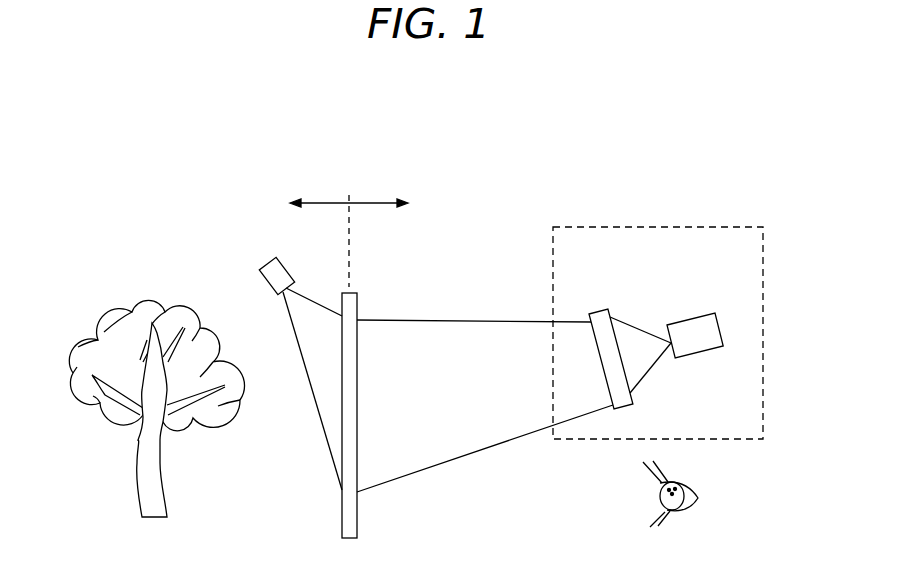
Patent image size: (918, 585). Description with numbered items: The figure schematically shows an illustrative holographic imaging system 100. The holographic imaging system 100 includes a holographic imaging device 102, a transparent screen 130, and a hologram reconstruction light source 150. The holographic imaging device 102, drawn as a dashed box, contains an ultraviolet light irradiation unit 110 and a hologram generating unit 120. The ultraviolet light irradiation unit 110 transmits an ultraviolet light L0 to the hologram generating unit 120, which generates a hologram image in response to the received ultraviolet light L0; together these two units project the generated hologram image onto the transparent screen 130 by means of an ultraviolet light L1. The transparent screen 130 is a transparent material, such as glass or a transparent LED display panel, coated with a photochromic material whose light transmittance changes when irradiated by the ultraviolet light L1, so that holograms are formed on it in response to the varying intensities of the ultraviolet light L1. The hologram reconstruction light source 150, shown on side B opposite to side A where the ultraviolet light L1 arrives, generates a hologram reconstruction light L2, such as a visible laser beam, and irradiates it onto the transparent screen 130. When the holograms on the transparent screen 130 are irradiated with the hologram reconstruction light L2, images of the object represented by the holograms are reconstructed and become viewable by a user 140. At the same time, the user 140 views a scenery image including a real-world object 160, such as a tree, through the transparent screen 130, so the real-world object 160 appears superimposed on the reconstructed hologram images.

The holographic imaging system 100 is at (572, 148).
The holographic imaging device 102 is at (720, 226).
The ultraviolet light irradiation unit 110 is at (693, 317).
The hologram generating unit 120 is at (595, 312).
The transparent screen 130 is at (358, 523).
The user 140 is at (690, 485).
The hologram reconstruction light source 150 is at (261, 268).
The real-world object 160 is at (142, 307).
The ultraviolet light L0 is at (653, 370).
The ultraviolet light L1 is at (480, 320).
The hologram reconstruction light L2 is at (330, 447).